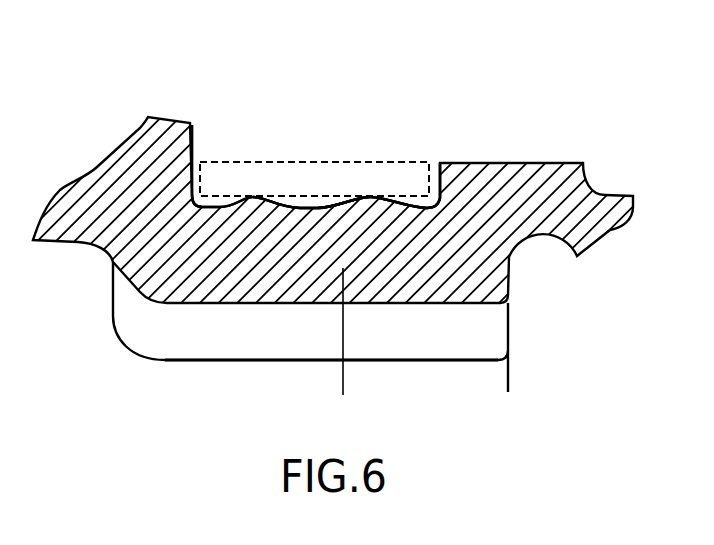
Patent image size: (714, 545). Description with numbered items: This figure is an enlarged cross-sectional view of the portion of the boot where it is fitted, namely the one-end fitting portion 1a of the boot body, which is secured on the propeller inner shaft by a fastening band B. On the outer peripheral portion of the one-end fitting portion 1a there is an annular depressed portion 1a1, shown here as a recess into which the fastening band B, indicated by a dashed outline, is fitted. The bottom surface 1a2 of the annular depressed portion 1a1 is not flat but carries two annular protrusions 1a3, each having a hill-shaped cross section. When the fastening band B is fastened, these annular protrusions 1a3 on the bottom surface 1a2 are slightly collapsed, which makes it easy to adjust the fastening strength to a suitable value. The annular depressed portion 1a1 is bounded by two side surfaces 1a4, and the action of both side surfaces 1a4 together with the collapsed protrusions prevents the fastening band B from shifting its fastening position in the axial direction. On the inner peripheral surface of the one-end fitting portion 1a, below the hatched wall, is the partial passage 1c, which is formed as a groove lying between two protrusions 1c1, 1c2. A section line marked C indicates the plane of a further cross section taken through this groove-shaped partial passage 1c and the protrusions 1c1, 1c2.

The one-end fitting portion 1a is at (326, 121).
The annular depressed portion 1a1 is at (270, 135).
The bottom surface 1a2 is at (313, 207).
The annular protrusions 1a3 is at (377, 197).
The side surfaces 1a4 is at (193, 160).
The fastening band B is at (320, 177).
The partial passage 1c is at (412, 304).
The protrusion 1c1 is at (293, 361).
The protrusion 1c2 is at (331, 397).
The section line C- C is at (343, 385).